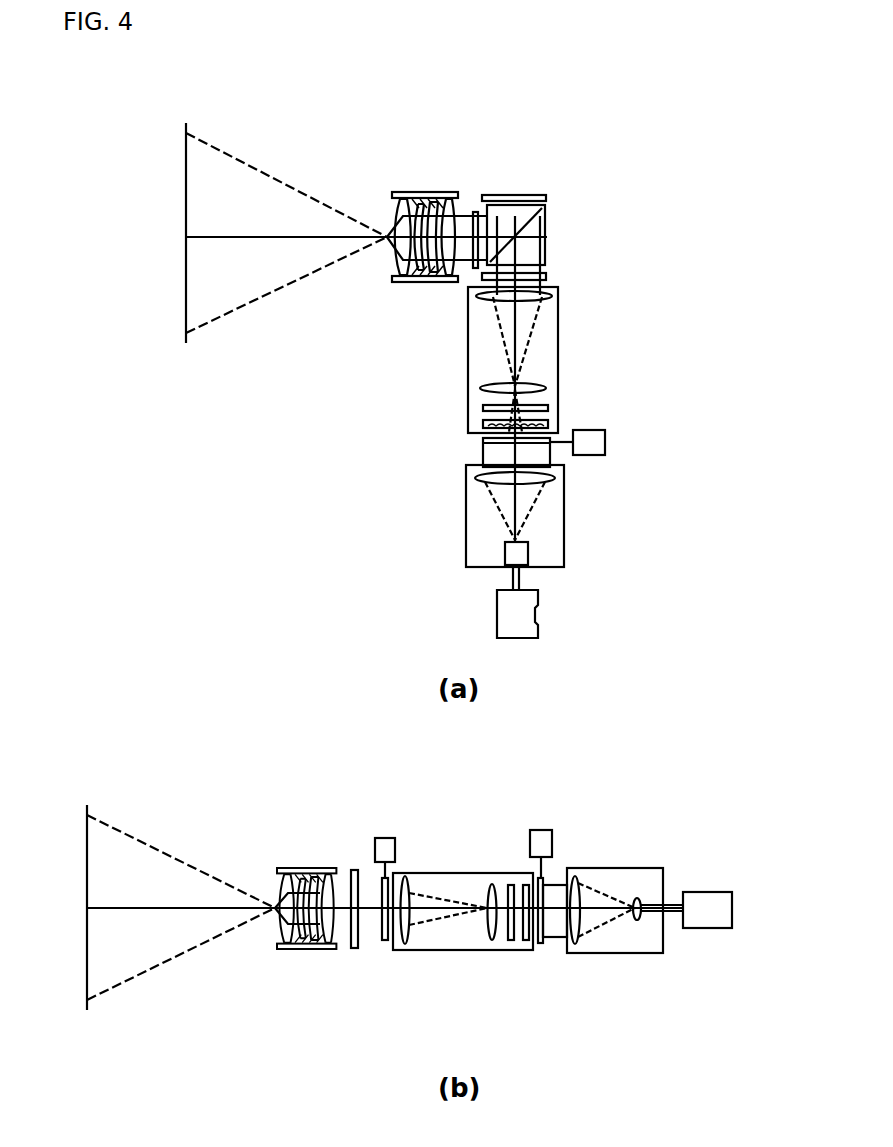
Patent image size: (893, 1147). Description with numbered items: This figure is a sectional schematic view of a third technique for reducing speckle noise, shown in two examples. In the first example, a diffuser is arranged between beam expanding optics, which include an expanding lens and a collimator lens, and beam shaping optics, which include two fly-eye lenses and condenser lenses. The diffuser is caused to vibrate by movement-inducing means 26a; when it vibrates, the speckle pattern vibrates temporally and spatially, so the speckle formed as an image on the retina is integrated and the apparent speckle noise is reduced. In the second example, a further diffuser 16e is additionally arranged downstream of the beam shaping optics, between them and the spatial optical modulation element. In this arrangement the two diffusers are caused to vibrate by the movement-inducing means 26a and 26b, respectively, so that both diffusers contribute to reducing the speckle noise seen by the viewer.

The diffuser 16e is at (329, 956).
The movement-inducing means 26a is at (512, 829).
The movement-inducing means 26b is at (353, 828).